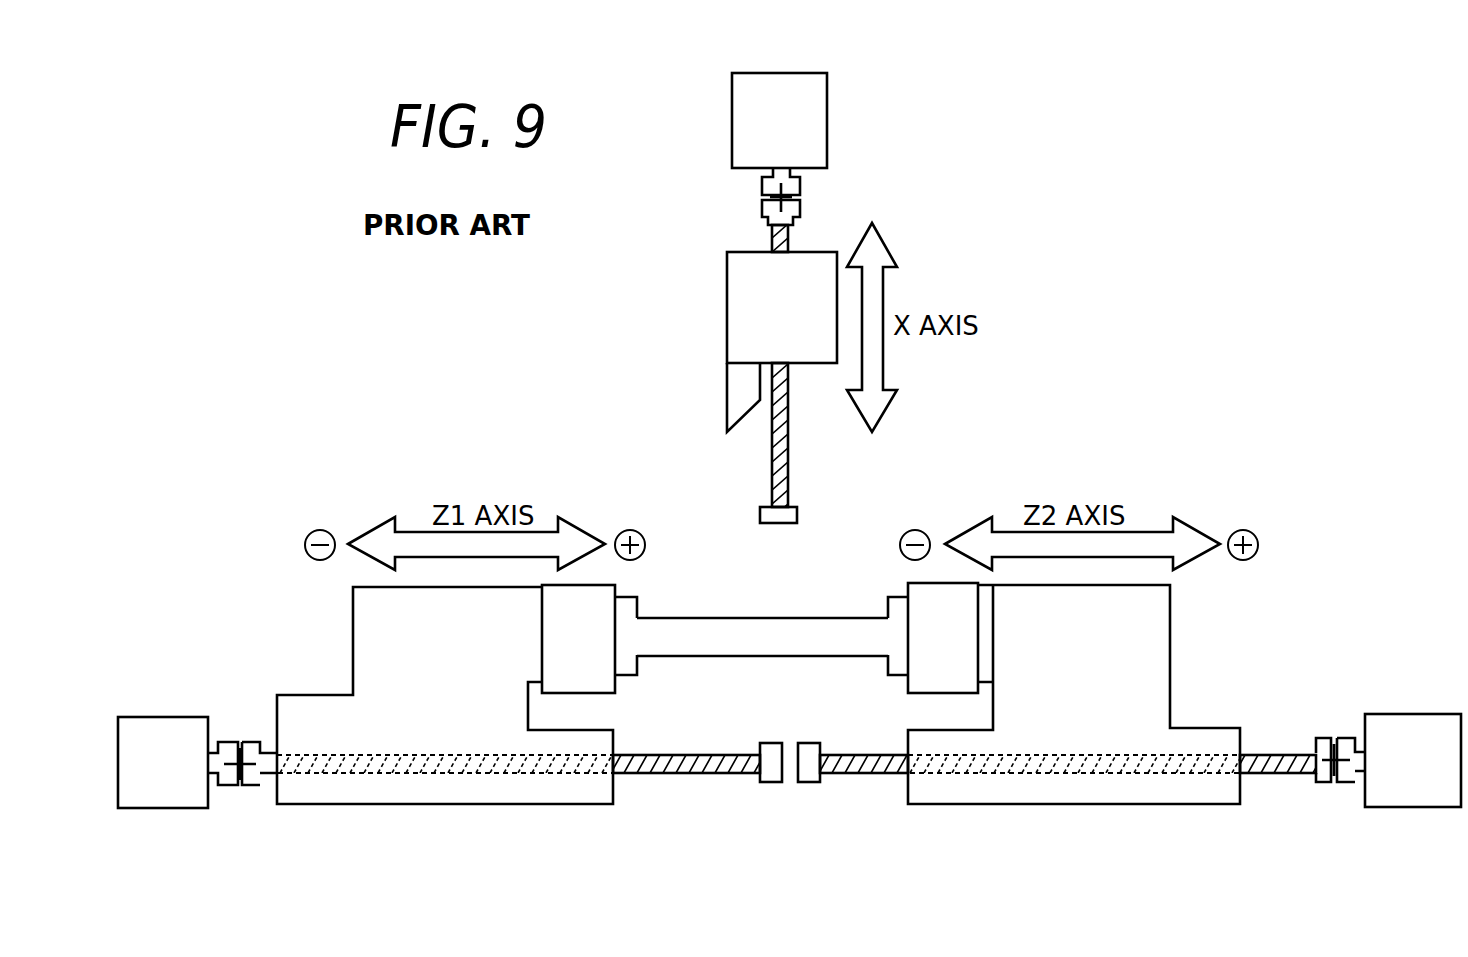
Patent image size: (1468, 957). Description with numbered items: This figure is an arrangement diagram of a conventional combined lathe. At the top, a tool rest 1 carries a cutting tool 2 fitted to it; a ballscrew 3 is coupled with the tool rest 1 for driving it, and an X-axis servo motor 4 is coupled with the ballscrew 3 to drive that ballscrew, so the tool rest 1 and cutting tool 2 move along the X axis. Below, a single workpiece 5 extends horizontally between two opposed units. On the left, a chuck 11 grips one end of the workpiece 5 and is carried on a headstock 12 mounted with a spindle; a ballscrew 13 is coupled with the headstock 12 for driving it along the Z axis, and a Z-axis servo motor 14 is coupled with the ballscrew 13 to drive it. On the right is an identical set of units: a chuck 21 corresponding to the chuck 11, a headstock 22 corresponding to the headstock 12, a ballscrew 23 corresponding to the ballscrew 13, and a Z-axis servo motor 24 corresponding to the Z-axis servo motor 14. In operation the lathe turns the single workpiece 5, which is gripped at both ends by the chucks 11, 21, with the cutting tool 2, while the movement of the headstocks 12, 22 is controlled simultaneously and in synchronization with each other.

The tool rest 1 is at (727, 273).
The cutting tool 2 is at (727, 386).
The ballscrew 3 is at (797, 507).
The X-axis servo motor 4 is at (827, 95).
The workpiece 5 is at (770, 657).
The chuck 11 is at (615, 586).
The headstock 12 is at (353, 610).
The ballscrew 13 is at (770, 782).
The Z-axis servo motor 14 is at (206, 808).
The chuck 21 is at (920, 583).
The headstock 22 is at (1170, 604).
The ballscrew 23 is at (810, 782).
The Z-axis servo motor 24 is at (1337, 783).